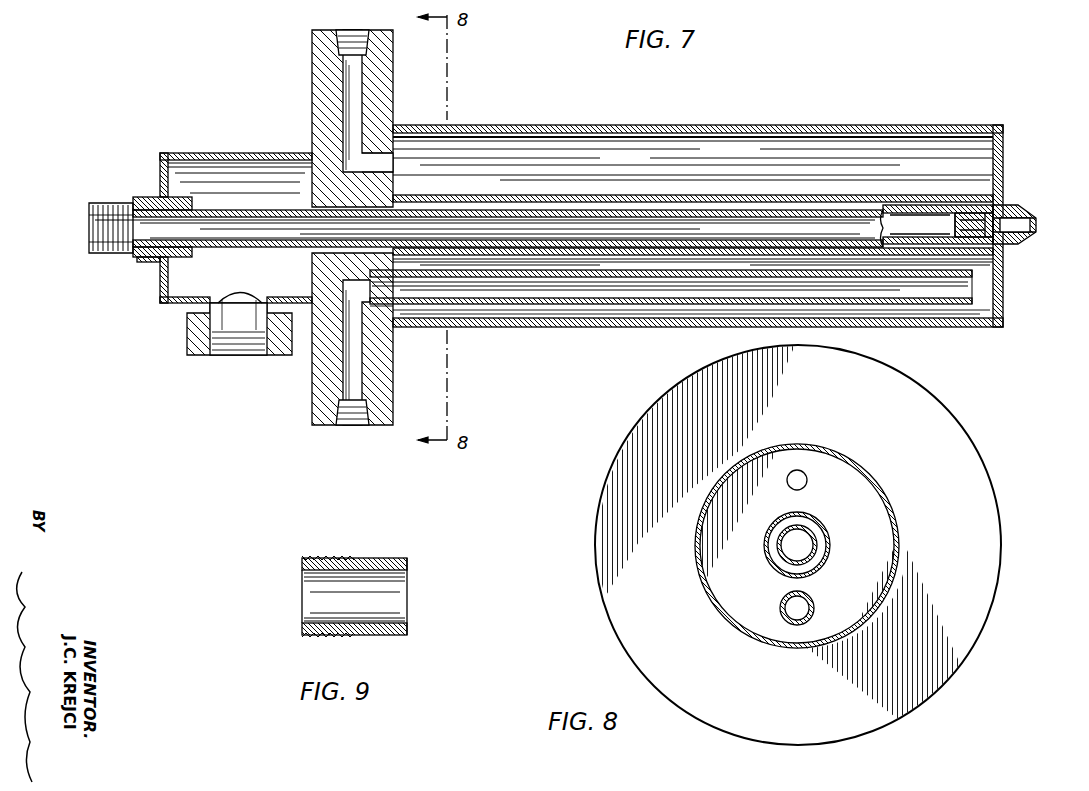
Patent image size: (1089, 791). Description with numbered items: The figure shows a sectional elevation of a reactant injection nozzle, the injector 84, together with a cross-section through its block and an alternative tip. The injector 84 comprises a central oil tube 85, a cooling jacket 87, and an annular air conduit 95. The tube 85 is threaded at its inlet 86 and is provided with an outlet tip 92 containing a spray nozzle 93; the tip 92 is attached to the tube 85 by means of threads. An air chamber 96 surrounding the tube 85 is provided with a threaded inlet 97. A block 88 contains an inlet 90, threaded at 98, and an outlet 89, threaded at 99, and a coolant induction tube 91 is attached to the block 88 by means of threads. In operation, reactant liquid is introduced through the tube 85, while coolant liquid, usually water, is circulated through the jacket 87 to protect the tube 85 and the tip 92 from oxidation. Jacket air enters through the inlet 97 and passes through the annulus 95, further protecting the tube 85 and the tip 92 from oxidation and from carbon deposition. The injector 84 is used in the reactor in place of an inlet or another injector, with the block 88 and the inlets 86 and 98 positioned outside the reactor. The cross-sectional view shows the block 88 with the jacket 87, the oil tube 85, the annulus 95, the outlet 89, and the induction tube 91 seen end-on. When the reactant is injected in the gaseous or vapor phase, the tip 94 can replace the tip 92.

In FIG. 7, the injector 84 is at (573, 127).
In FIG. 7, the central oil tube 85 is at (264, 247).
In FIG. 8, the central oil tube 85 is at (788, 550).
In FIG. 7, the inlet 86 is at (89, 231).
In FIG. 7, the cooling jacket 87 is at (1000, 328).
In FIG. 8, the cooling jacket 87 is at (898, 520).
In FIG. 7, the block 88 is at (312, 79).
In FIG. 8, the block 88 is at (815, 568).
In FIG. 7, the outlet 89 is at (393, 165).
In FIG. 8, the outlet 89 is at (798, 484).
In FIG. 7, the inlet 90 is at (343, 391).
In FIG. 7, the coolant induction tube 91 is at (966, 292).
In FIG. 8, the coolant induction tube 91 is at (811, 604).
In FIG. 7, the outlet tip 92 is at (1028, 210).
In FIG. 7, the spray nozzle 93 is at (1020, 235).
In FIG. 9, the tip 94 is at (400, 558).
In FIG. 7, the annular air conduit 95 is at (990, 208).
In FIG. 8, the annular air conduit 95 is at (812, 560).
In FIG. 7, the air chamber 96 is at (160, 300).
In FIG. 7, the threaded inlet 97 is at (235, 355).
In FIG. 7, the threads 98 is at (352, 425).
In FIG. 7, the threads 99 is at (352, 30).